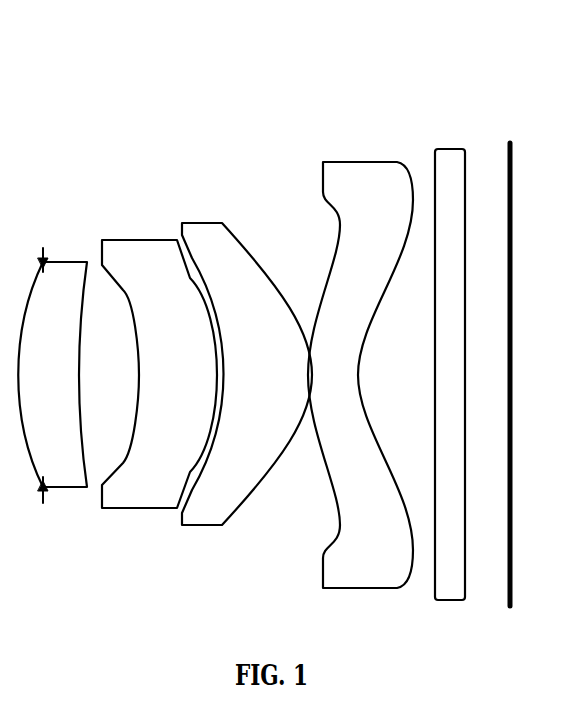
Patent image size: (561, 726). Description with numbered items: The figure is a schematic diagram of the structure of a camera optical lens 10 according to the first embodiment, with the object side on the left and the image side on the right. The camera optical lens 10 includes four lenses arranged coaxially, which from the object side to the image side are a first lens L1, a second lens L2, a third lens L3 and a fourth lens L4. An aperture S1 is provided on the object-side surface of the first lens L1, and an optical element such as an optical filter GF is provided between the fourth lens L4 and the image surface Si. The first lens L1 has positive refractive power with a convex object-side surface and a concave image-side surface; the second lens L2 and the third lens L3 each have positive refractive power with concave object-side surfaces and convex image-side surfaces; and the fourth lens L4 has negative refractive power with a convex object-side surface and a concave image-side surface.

The camera optical lens 10 is at (258, 80).
The first lens L1 is at (52, 358).
The second lens L2 is at (159, 361).
The third lens L3 is at (247, 359).
The fourth lens L4 is at (360, 359).
The aperture S1 is at (33, 392).
The optical filter GF is at (451, 359).
The image surface Si is at (515, 355).